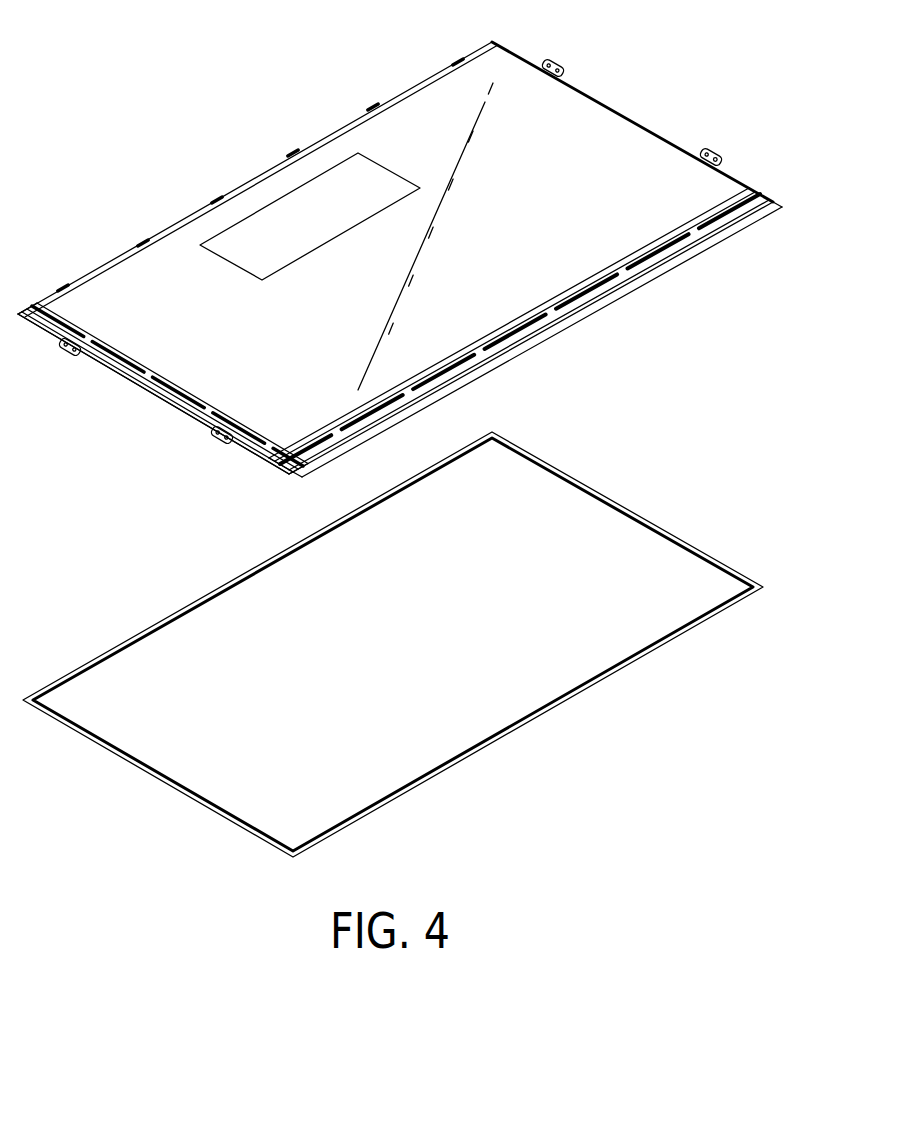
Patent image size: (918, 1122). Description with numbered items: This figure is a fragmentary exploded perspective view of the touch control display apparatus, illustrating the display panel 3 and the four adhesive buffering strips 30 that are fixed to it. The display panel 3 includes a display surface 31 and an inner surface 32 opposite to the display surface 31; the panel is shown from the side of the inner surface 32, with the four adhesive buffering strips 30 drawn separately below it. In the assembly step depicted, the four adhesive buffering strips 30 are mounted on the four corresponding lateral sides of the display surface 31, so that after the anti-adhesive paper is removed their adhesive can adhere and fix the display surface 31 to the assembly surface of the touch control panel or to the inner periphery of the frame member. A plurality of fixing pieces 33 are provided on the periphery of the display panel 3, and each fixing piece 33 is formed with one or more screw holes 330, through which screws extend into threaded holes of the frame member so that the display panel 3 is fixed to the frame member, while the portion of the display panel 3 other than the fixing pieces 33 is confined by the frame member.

The display panel 3 is at (411, 264).
The adhesive buffering strips 30 is at (615, 504).
The display surface 31 is at (547, 331).
The inner surface 32 is at (608, 140).
The fixing pieces 33 is at (711, 151).
The screw holes 330 is at (730, 155).